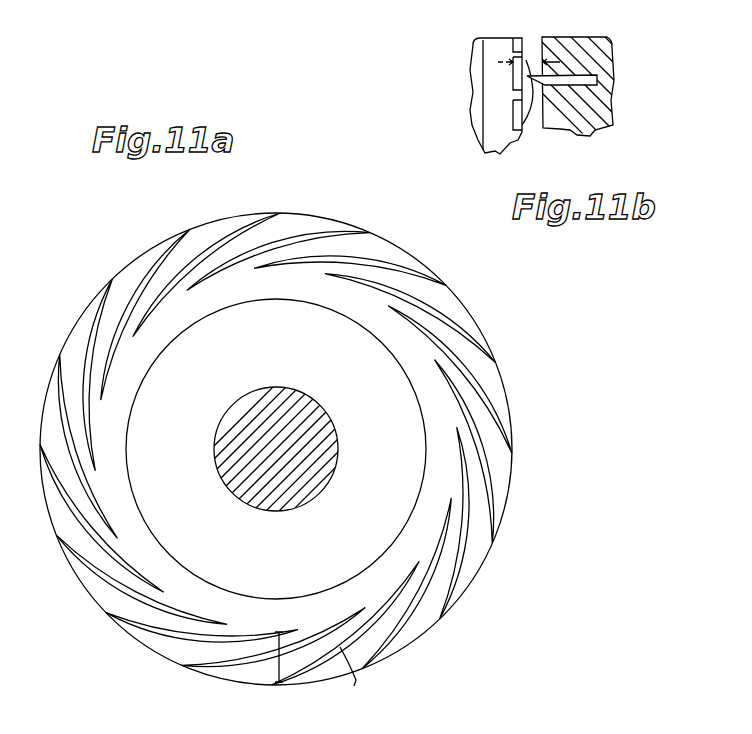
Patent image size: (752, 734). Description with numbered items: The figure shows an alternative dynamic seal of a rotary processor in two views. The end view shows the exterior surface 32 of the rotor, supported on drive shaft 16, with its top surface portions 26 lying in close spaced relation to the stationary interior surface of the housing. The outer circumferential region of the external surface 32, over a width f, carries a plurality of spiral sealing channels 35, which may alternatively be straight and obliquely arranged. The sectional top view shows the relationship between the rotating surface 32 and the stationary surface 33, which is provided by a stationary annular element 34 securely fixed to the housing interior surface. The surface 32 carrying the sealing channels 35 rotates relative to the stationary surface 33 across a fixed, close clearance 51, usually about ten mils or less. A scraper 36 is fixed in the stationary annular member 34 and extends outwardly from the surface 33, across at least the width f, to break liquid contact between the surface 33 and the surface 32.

In FIG. 11A, the drive shaft 16 is at (219, 438).
In FIG. 11A, the top surface portions 26 is at (328, 218).
In FIG. 11B, the top surface portions 26 is at (492, 100).
In FIG. 11A, the external surface 32 is at (478, 537).
In FIG. 11B, the external surface 32 is at (528, 97).
In FIG. 11B, the stationary surface 33 is at (540, 120).
In FIG. 11B, the stationary annular element 34 is at (555, 122).
In FIG. 11A, the sealing channels 35 is at (487, 400).
In FIG. 11B, the sealing channels 35 is at (513, 107).
In FIG. 11B, the scraper 36 is at (597, 73).
In FIG. 11B, the clearance 51 is at (530, 58).